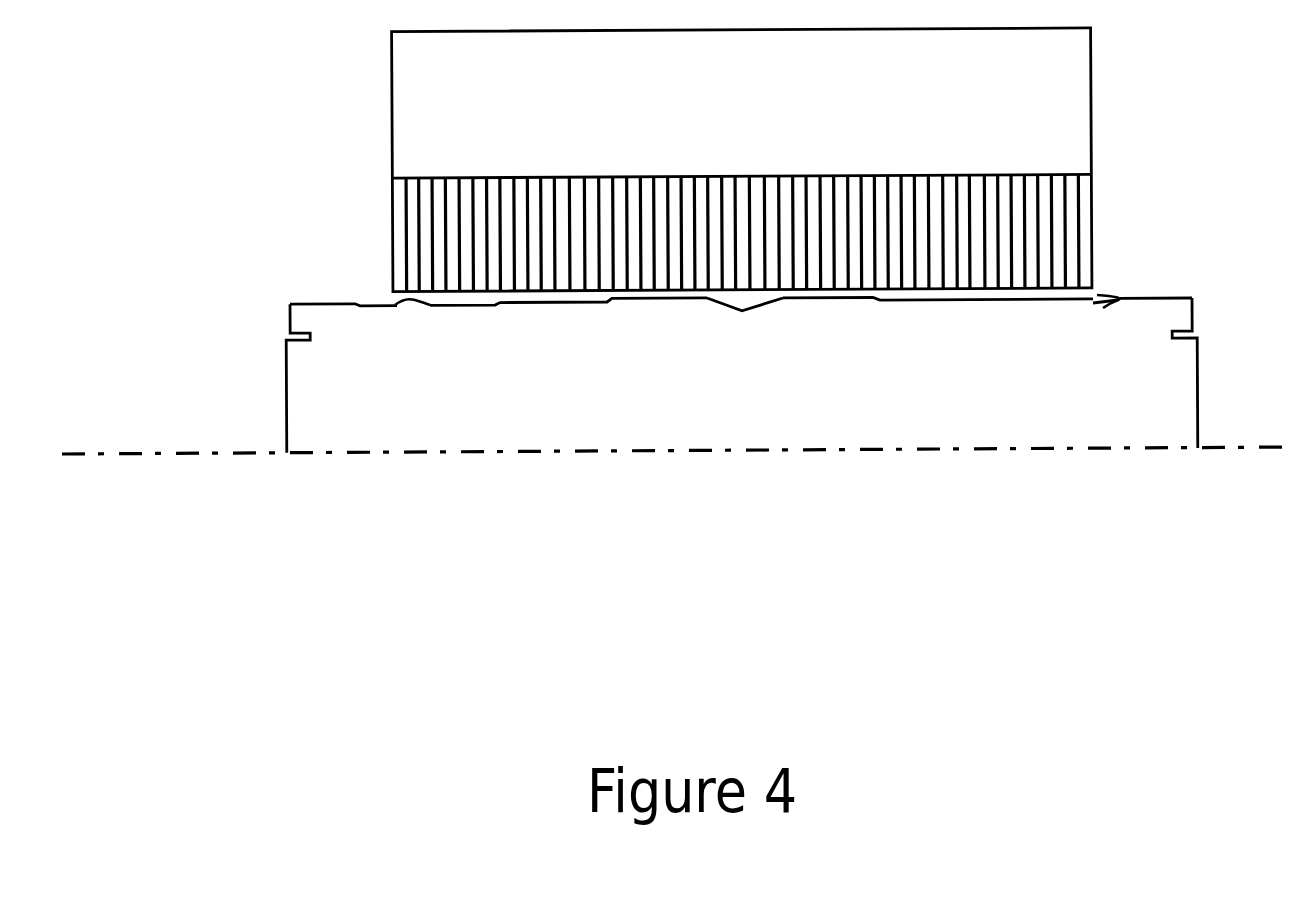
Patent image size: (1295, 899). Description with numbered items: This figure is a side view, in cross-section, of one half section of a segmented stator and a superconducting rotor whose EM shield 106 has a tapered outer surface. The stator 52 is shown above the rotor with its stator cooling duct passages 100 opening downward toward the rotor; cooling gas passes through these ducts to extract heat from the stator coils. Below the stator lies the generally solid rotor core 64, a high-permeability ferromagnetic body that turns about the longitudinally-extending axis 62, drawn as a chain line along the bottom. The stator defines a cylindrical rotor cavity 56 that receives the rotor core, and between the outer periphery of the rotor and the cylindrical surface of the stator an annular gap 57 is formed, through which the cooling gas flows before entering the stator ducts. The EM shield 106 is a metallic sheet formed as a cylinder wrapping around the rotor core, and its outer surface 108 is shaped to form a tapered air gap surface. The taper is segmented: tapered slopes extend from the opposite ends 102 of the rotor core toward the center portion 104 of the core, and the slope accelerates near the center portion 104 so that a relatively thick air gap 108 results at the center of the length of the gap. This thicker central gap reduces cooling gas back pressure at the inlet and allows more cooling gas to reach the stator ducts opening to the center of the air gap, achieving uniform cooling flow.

The stator 52 is at (826, 132).
The stator cooling duct passages 100 is at (695, 177).
The rotor core 64 is at (717, 420).
The longitudinally-extending axis 62 is at (862, 452).
The outer surface of the EM shield 108 is at (736, 297).
The center portion of the rotor core 104 is at (668, 307).
The opposite ends of the rotor core 102 is at (430, 304).
The annular gap 57 is at (393, 298).
The cylindrical rotor cavity 56 is at (1100, 287).
The EM shield 106 is at (908, 301).